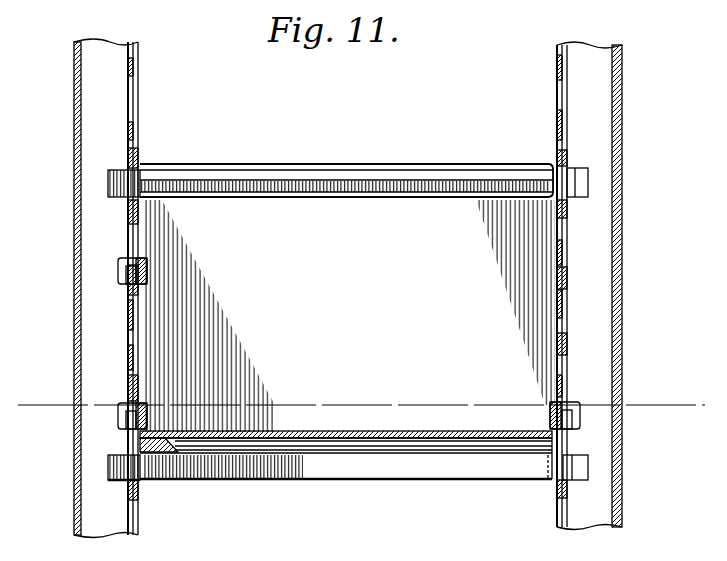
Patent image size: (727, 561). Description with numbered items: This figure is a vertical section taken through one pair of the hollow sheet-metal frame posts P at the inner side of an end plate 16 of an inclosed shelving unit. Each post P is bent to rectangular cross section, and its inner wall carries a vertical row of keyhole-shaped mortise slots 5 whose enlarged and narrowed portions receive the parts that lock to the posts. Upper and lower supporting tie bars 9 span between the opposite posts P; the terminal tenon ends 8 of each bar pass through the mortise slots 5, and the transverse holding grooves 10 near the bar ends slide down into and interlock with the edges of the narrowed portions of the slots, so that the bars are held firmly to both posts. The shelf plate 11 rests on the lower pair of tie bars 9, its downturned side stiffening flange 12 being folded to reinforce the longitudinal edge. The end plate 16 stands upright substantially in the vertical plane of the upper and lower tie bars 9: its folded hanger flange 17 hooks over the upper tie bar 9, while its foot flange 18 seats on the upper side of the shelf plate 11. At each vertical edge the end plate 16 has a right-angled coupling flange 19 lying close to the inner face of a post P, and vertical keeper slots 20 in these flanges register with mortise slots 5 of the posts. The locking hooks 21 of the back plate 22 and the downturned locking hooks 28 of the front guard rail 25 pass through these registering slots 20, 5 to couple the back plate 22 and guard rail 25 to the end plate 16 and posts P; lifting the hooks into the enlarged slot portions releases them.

The frame post P is at (78, 106).
The mortise slot 5 is at (133, 85).
The terminal tenon end 8 is at (582, 168).
The supporting tie bar 9 is at (310, 196).
The holding groove 10 is at (140, 170).
The shelf plate 11 is at (460, 432).
The side stiffening flange 12 is at (361, 420).
The end plate 16 is at (349, 316).
The hanger flange 17 is at (318, 172).
The foot flange 18 is at (370, 431).
The coupling flange 19 is at (130, 338).
The keeper slot 20 is at (133, 240).
The locking hook 21 is at (120, 284).
The back plate 22 is at (148, 272).
The front guard rail 25 is at (550, 416).
The downturned locking hook 28 is at (585, 422).